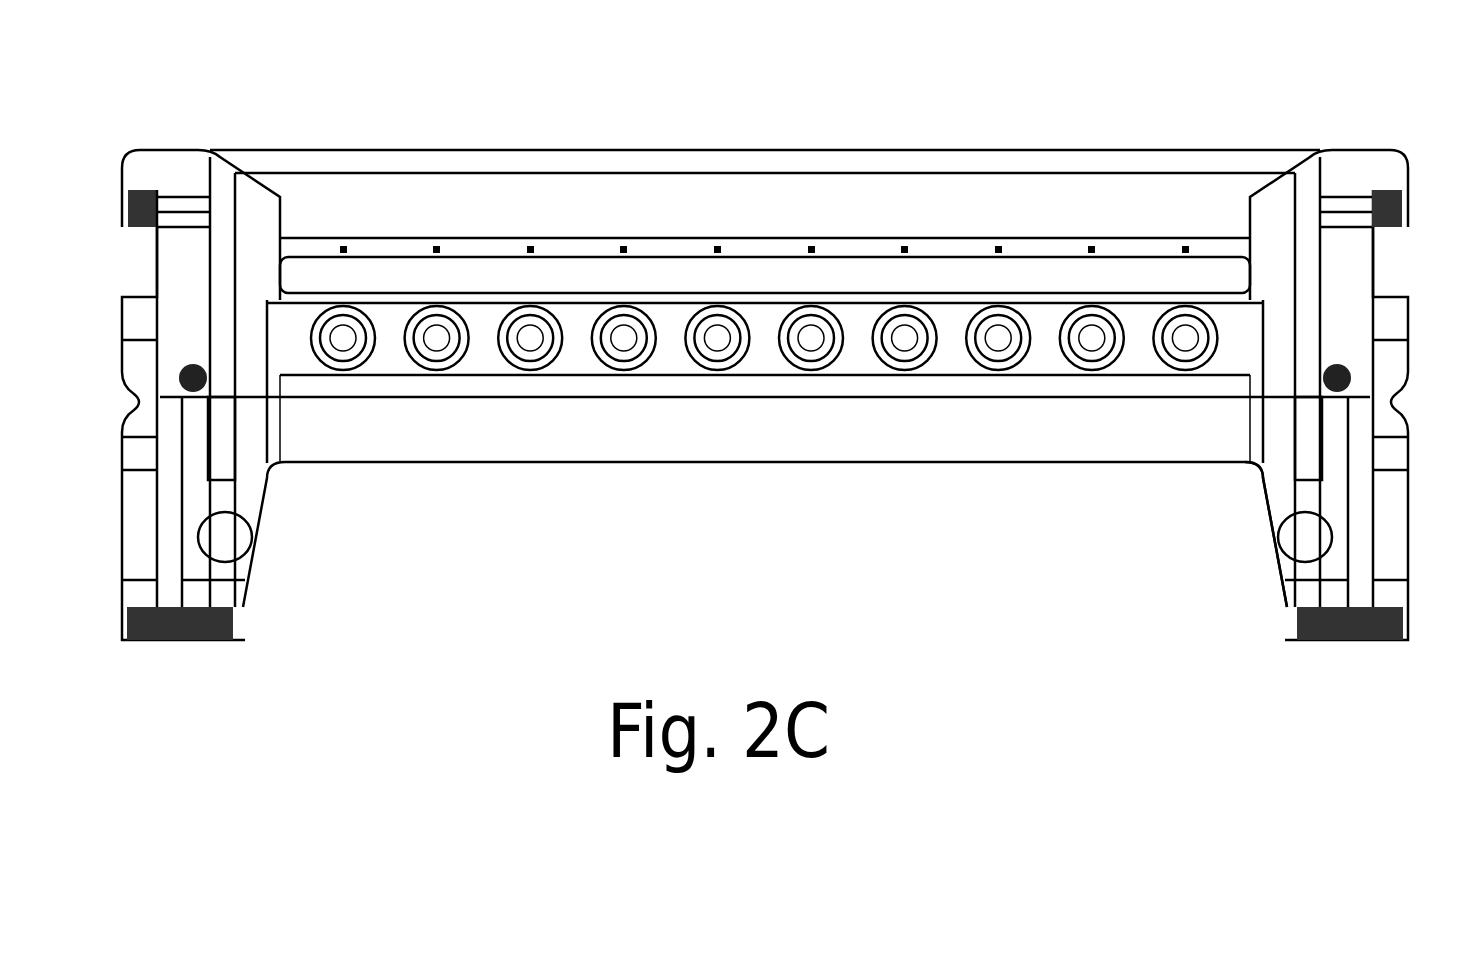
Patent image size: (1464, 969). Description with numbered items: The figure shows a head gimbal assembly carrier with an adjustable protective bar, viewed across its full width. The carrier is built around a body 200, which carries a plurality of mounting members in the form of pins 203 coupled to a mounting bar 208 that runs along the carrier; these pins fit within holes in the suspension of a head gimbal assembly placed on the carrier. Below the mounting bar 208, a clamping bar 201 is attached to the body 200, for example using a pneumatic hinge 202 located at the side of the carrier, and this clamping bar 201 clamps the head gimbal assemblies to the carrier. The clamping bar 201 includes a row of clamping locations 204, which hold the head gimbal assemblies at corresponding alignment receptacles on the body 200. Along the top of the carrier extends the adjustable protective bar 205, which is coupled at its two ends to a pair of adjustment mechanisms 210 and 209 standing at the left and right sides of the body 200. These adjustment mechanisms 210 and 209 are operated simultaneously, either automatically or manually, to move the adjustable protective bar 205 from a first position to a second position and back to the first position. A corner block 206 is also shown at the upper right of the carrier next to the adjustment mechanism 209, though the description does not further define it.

The body 200 is at (706, 547).
The clamping bar 201 is at (389, 303).
The pneumatic hinge 202 is at (1380, 636).
The pins 203 is at (808, 251).
The clamping locations 204 is at (733, 302).
The adjustable protective bar 205 is at (307, 157).
The corner block 206 is at (1393, 197).
The mounting bar 208 is at (680, 246).
The adjustment mechanism 209 is at (1347, 92).
The adjustment mechanism 210 is at (180, 92).